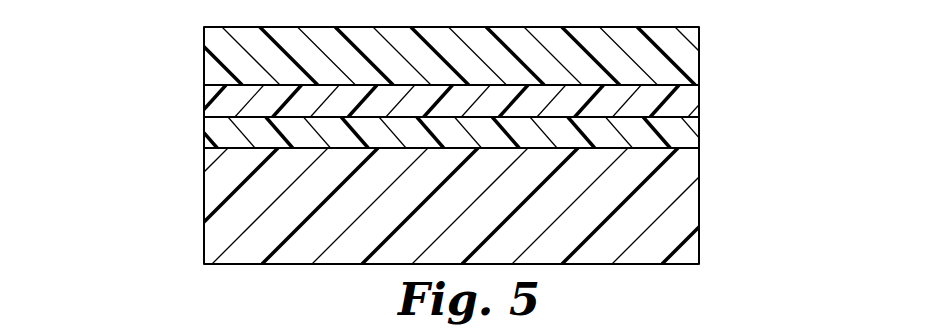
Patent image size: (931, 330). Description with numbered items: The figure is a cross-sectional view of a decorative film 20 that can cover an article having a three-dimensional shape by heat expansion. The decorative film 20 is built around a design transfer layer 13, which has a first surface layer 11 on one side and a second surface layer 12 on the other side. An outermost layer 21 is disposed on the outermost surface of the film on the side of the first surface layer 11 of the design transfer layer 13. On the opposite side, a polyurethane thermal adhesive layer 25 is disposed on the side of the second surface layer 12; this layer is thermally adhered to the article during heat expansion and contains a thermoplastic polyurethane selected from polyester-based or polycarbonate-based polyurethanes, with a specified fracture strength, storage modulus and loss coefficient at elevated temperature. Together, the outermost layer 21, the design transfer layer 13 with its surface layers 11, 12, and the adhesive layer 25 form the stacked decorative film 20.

The decorative film 20 is at (428, 133).
The outermost layer 21 is at (689, 59).
The design transfer layer 13 is at (440, 101).
The first surface layer 11 is at (688, 110).
The second surface layer 12 is at (684, 140).
The polyurethane thermal adhesive layer 25 is at (685, 215).